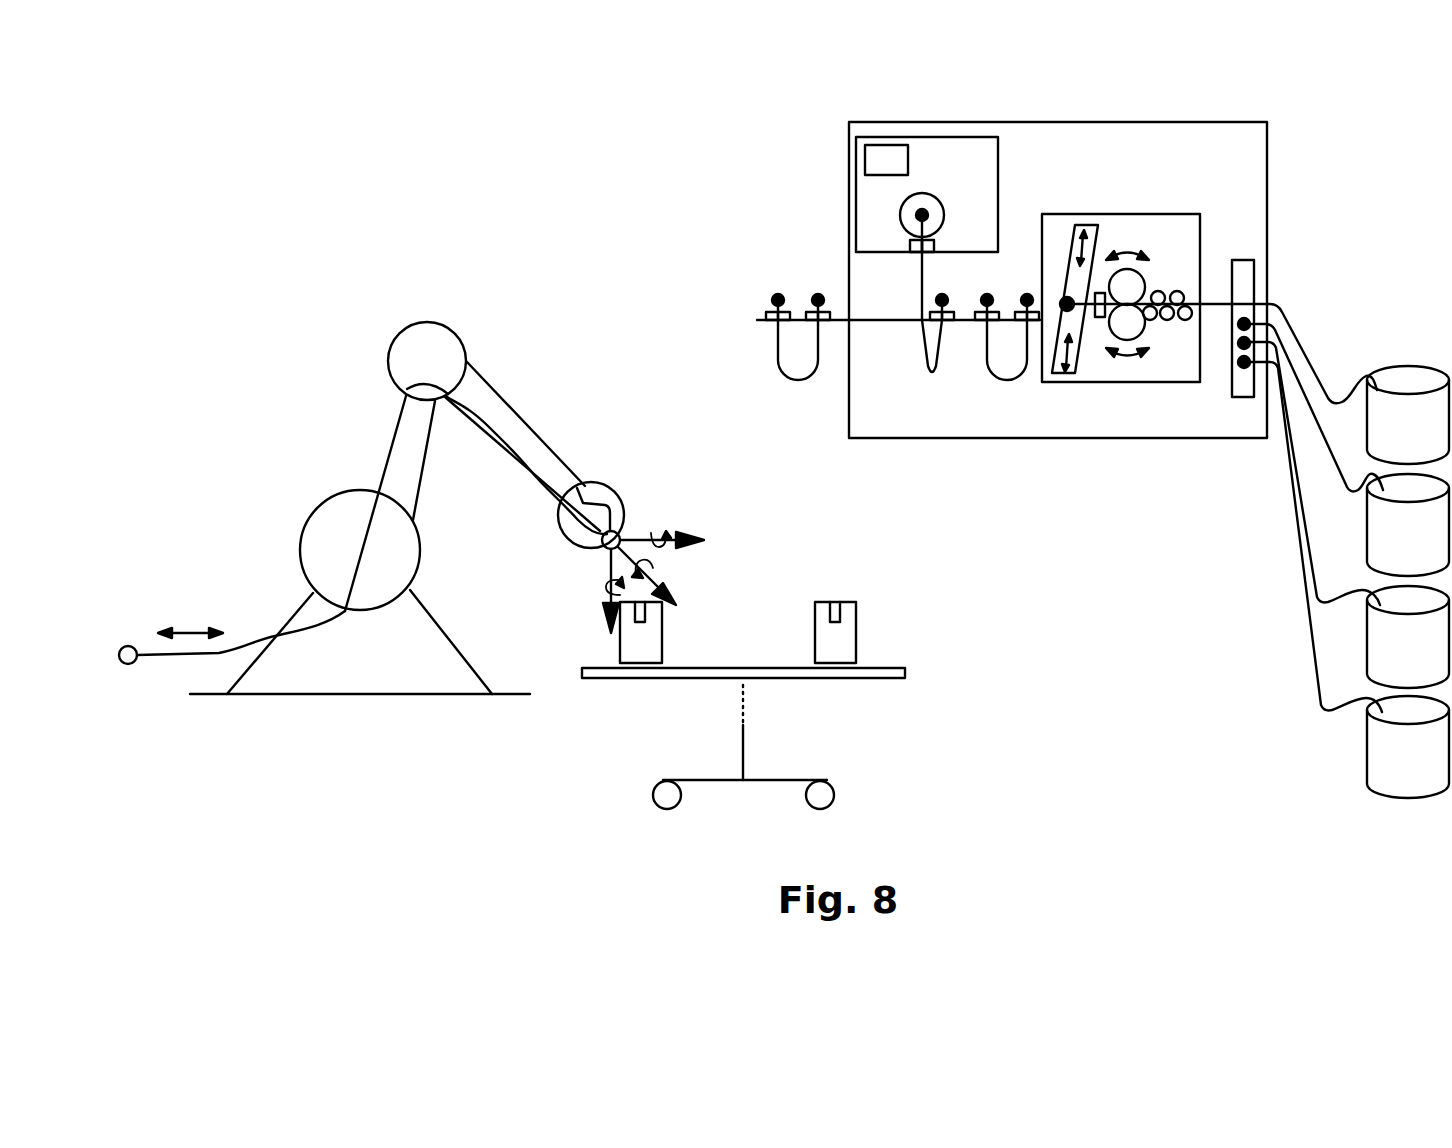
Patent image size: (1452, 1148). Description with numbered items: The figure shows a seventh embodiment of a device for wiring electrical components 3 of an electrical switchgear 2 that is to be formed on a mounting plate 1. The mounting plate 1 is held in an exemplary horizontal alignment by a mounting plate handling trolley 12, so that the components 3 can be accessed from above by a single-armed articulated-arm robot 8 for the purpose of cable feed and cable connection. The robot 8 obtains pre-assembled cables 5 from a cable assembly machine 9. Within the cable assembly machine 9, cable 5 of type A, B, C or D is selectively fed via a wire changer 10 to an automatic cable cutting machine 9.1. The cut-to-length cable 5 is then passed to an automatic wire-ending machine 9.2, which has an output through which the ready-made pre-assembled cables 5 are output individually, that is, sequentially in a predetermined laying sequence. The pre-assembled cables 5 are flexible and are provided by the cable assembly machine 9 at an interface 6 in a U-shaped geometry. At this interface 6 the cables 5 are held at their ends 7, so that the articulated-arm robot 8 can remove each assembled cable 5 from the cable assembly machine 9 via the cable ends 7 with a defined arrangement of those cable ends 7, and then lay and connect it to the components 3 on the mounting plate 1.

The mounting plate 1 is at (885, 680).
The electrical switchgear 2 is at (768, 582).
The electrical components 3 is at (640, 637).
The pre-assembled cables 5 is at (505, 426).
The interface 6 is at (755, 225).
The cable ends 7 is at (128, 666).
The articulated-arm robot 8 is at (428, 353).
The cable assembly machine 9 is at (1268, 200).
The automatic cable cutting machine 9.1 is at (1127, 227).
The automatic wire-ending machine 9.2 is at (931, 148).
The wire changer 10 is at (1247, 275).
The mounting plate handling trolley 12 is at (744, 748).